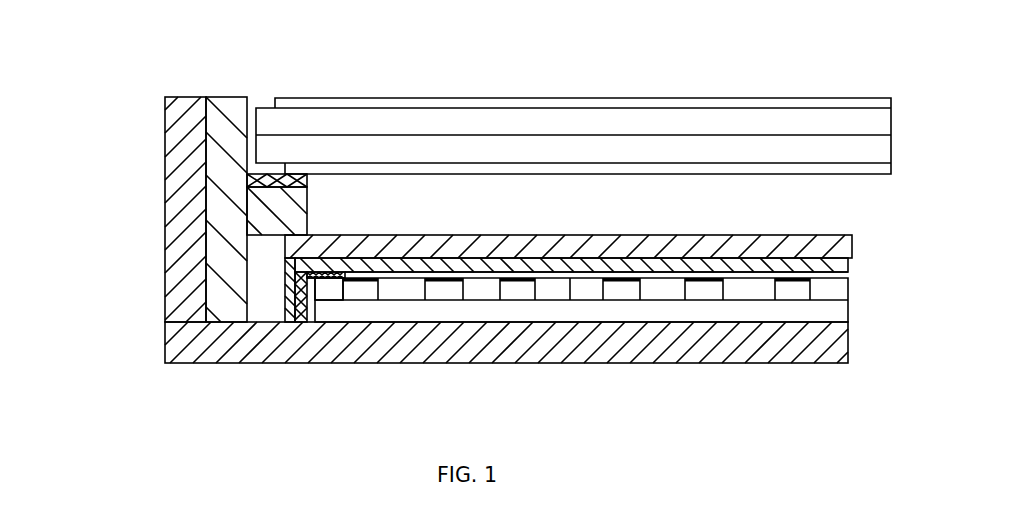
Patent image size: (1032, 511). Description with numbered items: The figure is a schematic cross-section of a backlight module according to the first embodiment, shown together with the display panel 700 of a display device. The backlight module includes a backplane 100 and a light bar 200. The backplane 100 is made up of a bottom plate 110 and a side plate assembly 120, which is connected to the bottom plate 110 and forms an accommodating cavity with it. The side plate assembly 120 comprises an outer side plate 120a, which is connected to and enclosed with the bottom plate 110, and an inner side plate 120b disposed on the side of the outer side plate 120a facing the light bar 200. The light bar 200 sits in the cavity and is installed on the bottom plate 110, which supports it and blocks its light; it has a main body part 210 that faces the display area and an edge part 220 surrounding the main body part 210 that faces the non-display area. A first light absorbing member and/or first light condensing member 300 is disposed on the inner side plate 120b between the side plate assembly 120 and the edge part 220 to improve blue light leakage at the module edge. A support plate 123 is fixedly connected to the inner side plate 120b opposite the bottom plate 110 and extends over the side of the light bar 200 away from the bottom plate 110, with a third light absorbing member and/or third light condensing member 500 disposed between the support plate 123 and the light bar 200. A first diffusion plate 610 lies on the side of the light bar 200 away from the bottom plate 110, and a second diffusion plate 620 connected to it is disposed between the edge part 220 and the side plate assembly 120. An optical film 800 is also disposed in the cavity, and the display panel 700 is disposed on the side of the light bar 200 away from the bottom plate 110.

The backplane 100 is at (343, 8).
The bottom plate 110 is at (508, 390).
The side plate assembly 120 is at (98, 323).
The outer side plate 120a is at (182, 132).
The inner side plate 120b is at (230, 182).
The support plate 123 is at (257, 215).
The light bar 200 is at (492, 20).
The main body part 210 is at (690, 390).
The edge part 220 is at (365, 380).
The first light absorbing member and/or first light condensing member 300 is at (310, 282).
The third light absorbing member and/or third light condensing member 500 is at (343, 278).
The first diffusion plate 610 is at (537, 265).
The second diffusion plate 620 is at (288, 290).
The display panel 700 is at (537, 163).
The optical film 800 is at (788, 247).